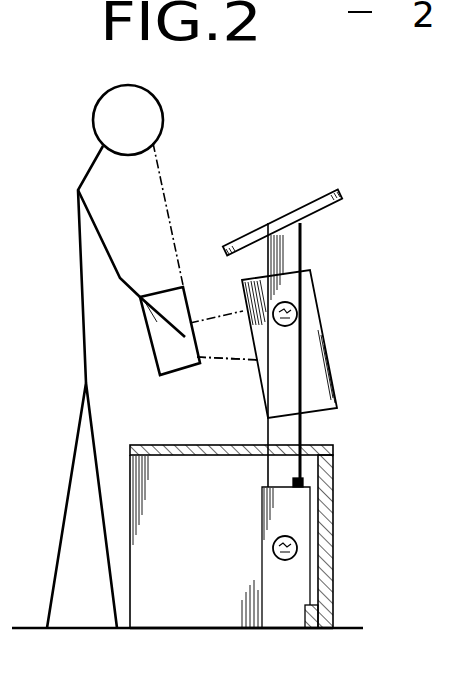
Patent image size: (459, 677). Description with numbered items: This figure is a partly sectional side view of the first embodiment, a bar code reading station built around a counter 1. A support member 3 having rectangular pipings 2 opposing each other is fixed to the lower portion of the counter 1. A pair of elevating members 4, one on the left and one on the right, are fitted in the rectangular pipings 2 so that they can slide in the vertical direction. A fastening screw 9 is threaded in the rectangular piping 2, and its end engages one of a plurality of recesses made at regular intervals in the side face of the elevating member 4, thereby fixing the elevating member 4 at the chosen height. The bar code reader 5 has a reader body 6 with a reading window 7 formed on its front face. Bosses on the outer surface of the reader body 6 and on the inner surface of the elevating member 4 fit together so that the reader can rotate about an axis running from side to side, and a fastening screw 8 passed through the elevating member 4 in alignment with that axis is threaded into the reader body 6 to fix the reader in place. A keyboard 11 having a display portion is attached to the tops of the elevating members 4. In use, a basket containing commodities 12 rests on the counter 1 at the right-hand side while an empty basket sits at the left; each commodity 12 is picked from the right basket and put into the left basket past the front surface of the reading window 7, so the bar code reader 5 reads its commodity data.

The counter 1 is at (333, 449).
The rectangular piping 2 is at (270, 522).
The support member 3 is at (288, 615).
The elevating member 4 is at (287, 430).
The bar code reader 5 is at (309, 321).
The reader body 6 is at (307, 305).
The reading window 7 is at (253, 342).
The fastening screw 8 is at (294, 318).
The fastening screw 9 is at (280, 560).
The keyboard 11 is at (297, 210).
The commodity 12 is at (167, 352).